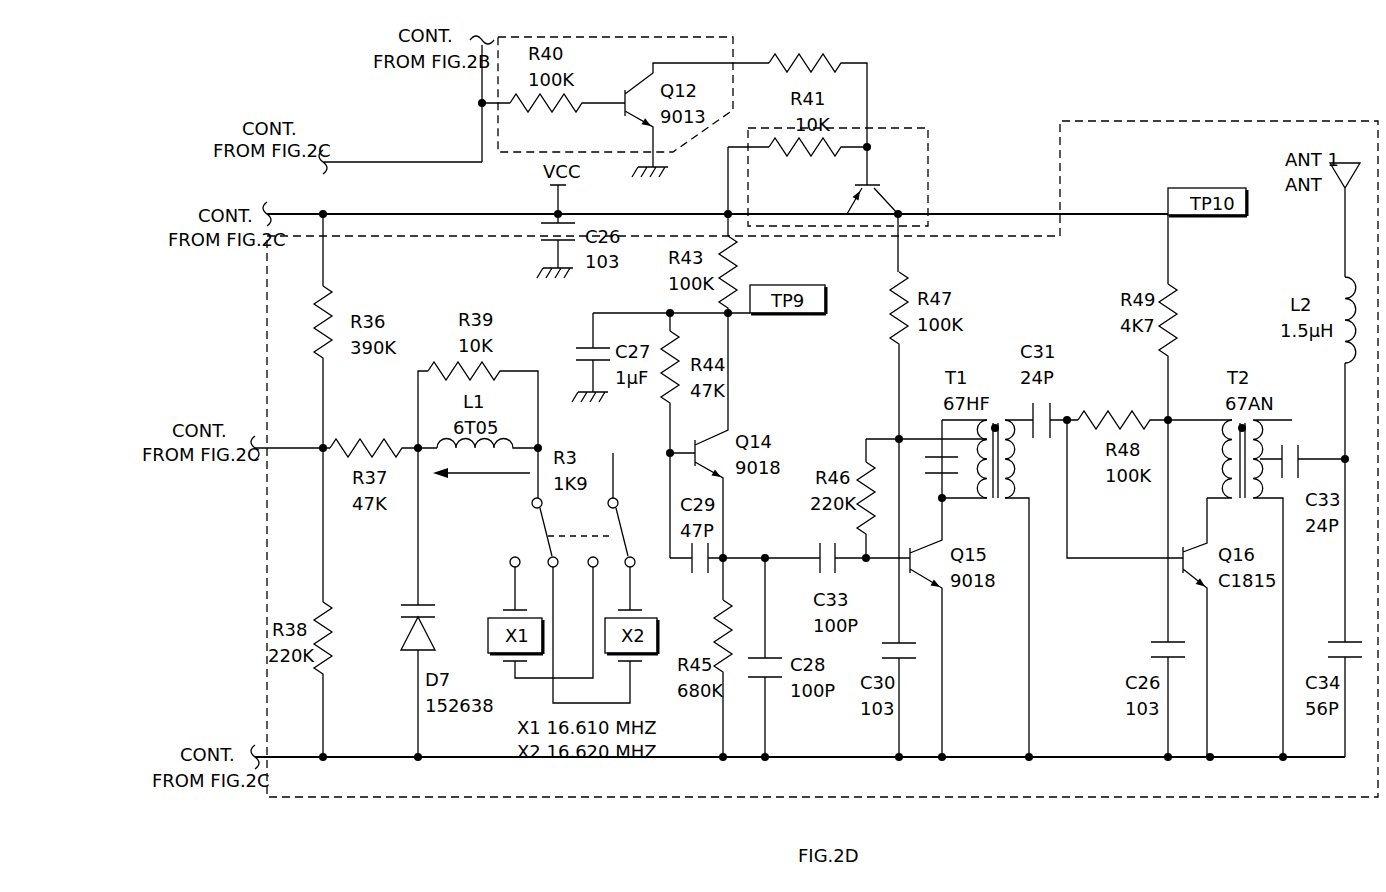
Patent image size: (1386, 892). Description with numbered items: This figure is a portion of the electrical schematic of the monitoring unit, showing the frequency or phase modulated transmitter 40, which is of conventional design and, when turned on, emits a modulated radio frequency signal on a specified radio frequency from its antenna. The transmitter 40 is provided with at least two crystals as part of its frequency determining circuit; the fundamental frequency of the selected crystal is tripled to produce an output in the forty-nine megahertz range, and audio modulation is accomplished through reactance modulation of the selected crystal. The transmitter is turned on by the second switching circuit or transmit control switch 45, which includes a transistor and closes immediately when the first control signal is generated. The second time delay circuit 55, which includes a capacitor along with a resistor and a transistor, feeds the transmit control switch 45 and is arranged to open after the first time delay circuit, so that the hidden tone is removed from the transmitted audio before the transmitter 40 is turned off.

The transmitter 40 is at (598, 768).
The transmit control switch 45 is at (912, 150).
The second time delay circuit 55 is at (482, 140).